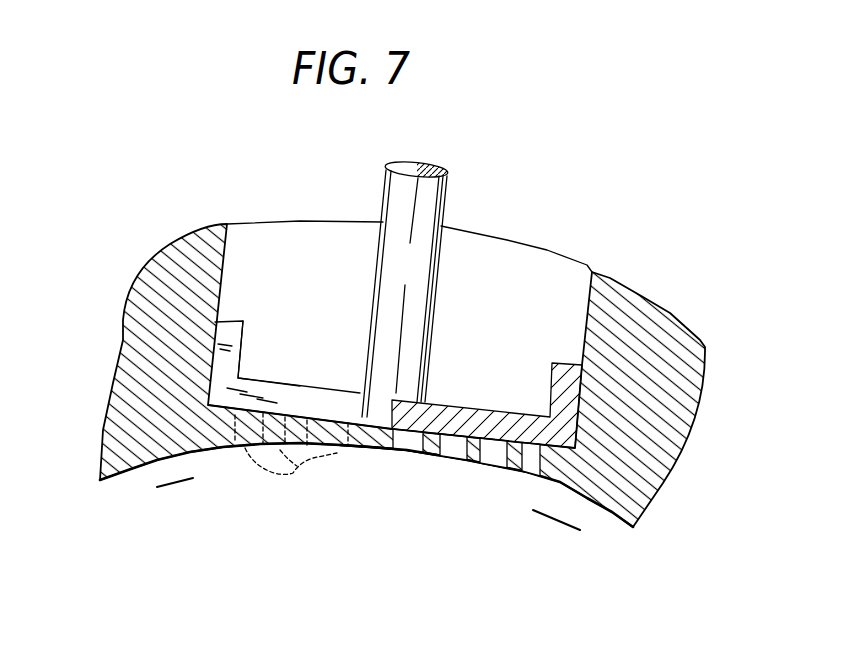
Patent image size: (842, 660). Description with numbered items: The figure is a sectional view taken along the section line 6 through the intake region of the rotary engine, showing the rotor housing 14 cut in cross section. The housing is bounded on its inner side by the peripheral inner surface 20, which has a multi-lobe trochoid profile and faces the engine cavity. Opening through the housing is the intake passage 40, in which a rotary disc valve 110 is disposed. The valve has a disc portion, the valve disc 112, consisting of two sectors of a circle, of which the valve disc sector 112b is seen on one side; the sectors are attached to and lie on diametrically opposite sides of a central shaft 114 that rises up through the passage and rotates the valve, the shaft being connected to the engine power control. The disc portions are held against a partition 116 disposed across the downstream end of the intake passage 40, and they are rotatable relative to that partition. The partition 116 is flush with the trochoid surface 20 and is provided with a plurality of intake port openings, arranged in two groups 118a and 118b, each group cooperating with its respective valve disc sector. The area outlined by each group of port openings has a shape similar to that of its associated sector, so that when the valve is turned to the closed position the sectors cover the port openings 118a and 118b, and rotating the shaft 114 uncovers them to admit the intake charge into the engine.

The section line 6 is at (177, 494).
The rotor housing 14 is at (667, 320).
The peripheral inner surface 20 is at (631, 528).
The intake passage 40 is at (594, 275).
The rotary disc valve 110 is at (333, 386).
The valve disc 112 is at (283, 390).
The valve disc sector 112b is at (497, 418).
The central shaft 114 is at (437, 205).
The partition 116 is at (383, 450).
The group of intake port openings 118a is at (290, 463).
The group of intake port openings 118b is at (527, 466).